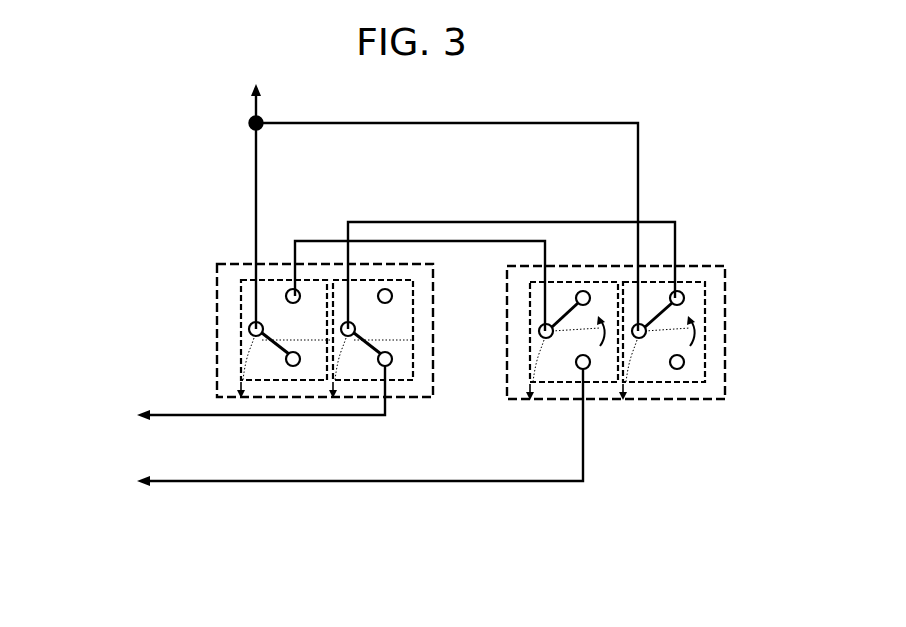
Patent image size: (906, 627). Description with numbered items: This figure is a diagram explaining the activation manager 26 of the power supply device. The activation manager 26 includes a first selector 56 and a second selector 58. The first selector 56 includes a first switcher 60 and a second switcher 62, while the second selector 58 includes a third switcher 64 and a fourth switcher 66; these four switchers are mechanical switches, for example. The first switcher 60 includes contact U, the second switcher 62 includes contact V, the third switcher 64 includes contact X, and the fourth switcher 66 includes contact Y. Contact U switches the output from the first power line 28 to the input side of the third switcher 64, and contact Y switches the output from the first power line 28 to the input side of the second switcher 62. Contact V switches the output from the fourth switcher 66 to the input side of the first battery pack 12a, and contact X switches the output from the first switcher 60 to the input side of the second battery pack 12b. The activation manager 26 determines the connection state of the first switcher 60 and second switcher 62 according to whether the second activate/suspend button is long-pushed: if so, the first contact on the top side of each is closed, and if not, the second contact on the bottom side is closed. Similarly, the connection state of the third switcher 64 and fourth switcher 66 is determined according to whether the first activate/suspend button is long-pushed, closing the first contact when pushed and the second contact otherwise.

The first power line 28 is at (463, 207).
The first selector 56 is at (425, 399).
The second selector 58 is at (712, 400).
The first switcher 60 is at (240, 300).
The second switcher 62 is at (414, 300).
The third switcher 64 is at (530, 340).
The fourth switcher 66 is at (706, 340).
The first battery pack 12a is at (148, 414).
The second battery pack 12b is at (148, 480).
The activation manager 26 is at (32, 601).